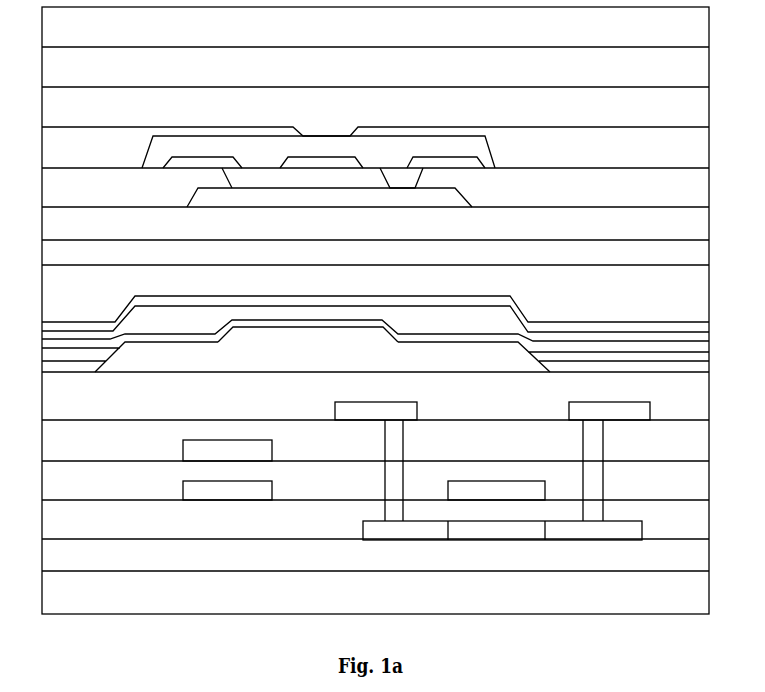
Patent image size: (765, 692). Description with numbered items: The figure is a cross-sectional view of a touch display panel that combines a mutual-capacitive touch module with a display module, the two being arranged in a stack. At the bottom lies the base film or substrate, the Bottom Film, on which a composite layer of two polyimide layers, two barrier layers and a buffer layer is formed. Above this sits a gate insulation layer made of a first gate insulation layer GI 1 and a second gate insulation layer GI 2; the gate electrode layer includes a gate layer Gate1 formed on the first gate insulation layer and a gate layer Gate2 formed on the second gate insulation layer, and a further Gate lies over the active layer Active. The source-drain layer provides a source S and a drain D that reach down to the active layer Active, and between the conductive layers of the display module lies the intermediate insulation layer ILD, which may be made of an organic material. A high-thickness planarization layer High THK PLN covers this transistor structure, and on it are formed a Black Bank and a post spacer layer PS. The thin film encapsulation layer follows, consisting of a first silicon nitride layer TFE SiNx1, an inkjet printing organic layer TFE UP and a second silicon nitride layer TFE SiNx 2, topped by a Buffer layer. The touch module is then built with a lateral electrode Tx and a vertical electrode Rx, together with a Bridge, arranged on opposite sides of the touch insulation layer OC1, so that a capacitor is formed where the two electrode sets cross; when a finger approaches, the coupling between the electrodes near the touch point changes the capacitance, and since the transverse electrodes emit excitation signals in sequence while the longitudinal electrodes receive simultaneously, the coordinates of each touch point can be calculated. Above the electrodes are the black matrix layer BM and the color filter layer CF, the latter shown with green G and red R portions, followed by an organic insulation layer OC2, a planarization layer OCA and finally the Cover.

The cover Cover is at (375, 27).
The planarization layer OCA is at (375, 67).
The organic insulation layer OC2 is at (375, 107).
The color filter layer CF is at (375, 147).
The touch insulation layer OC1 is at (375, 187).
The black matrix layer BM is at (318, 162).
The green color filter G is at (92, 147).
The red color filter R is at (602, 147).
The vertical electrode Rx is at (324, 166).
The lateral electrode Tx is at (321, 166).
The bridge Bridge is at (329, 198).
The buffer layer Buffer is at (375, 223).
The second silicon nitride layer TFE SiNx 2 is at (375, 253).
The inkjet printing organic layer TFE UP is at (375, 304).
The first silicon nitride layer TFE SiNx1 is at (375, 330).
The post spacer layer PS is at (308, 336).
The black bank Black Bank is at (375, 357).
The high-thickness planarization layer High THK PLN is at (375, 396).
The source electrode of source-drain layer S is at (376, 461).
The drain electrode of source-drain layer D is at (609, 461).
The intermediate insulation layer ILD is at (375, 440).
The second gate insulation layer GI 2 is at (375, 480).
The first gate insulation layer GI 1 is at (375, 519).
The gate layer Gate2 is at (227, 451).
The gate layer Gate1 is at (227, 491).
The gate electrode layer Gate is at (496, 492).
The active layer Active is at (502, 532).
The base film Bottom Film is at (375, 592).